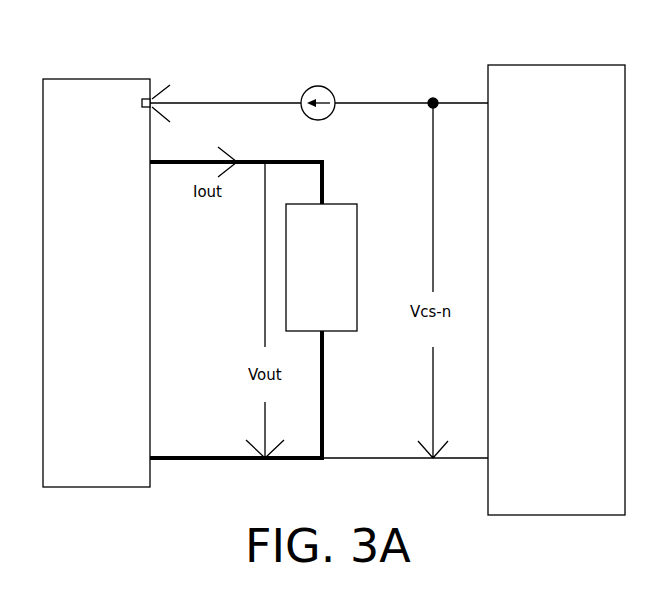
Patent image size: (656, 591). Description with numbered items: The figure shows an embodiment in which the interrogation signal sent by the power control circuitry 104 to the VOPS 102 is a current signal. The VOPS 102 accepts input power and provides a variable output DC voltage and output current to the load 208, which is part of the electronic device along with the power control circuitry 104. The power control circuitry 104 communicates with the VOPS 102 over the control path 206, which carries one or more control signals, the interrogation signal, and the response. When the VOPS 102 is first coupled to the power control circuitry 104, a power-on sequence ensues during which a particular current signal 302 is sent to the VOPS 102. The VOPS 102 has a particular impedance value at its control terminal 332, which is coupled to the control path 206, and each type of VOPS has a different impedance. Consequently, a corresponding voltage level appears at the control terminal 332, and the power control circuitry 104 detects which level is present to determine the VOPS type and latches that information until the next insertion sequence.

The VOPS 102 is at (100, 79).
The power control circuitry 104 is at (548, 65).
The control path 206 is at (212, 104).
The load 208 is at (357, 230).
The current signal 302 is at (318, 86).
The control terminal 332 is at (143, 98).